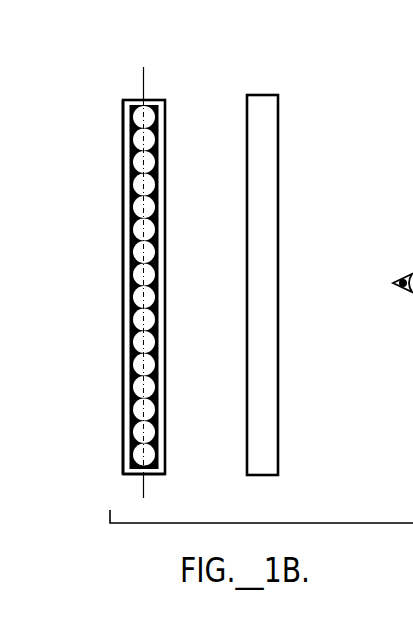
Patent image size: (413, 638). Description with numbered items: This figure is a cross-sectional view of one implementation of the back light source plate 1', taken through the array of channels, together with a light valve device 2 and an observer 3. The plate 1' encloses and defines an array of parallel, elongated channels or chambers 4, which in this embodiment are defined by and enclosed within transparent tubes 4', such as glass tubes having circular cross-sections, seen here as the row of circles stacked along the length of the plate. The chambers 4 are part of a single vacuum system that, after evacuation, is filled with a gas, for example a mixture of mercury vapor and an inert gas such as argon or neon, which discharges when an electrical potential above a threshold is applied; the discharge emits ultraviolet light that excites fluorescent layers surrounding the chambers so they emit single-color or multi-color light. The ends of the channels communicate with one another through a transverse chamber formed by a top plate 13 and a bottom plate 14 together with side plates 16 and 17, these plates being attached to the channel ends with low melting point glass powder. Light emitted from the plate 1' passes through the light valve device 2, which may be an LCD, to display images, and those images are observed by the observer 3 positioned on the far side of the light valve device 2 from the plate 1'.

The plate 1' is at (170, 290).
The light valve device 2 is at (247, 254).
The observer 3 is at (402, 307).
The channels or chambers 4 is at (178, 128).
The tubes 4' is at (176, 206).
The top plate 13 is at (123, 347).
The bottom plate 14 is at (159, 346).
The side plate 16 is at (133, 474).
The side plate 17 is at (146, 100).